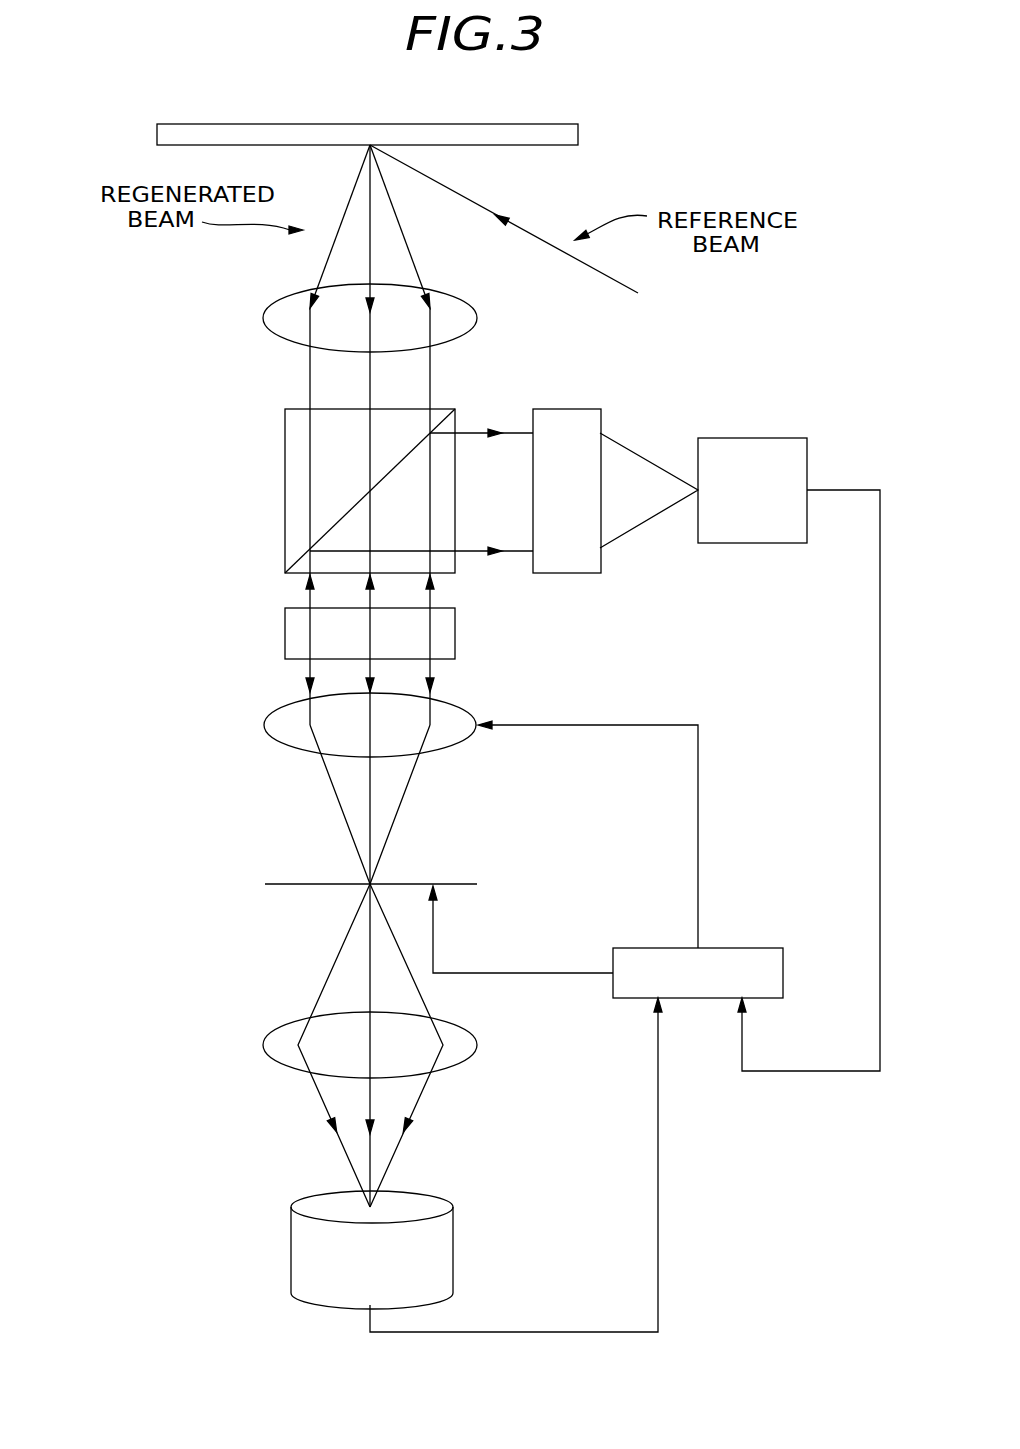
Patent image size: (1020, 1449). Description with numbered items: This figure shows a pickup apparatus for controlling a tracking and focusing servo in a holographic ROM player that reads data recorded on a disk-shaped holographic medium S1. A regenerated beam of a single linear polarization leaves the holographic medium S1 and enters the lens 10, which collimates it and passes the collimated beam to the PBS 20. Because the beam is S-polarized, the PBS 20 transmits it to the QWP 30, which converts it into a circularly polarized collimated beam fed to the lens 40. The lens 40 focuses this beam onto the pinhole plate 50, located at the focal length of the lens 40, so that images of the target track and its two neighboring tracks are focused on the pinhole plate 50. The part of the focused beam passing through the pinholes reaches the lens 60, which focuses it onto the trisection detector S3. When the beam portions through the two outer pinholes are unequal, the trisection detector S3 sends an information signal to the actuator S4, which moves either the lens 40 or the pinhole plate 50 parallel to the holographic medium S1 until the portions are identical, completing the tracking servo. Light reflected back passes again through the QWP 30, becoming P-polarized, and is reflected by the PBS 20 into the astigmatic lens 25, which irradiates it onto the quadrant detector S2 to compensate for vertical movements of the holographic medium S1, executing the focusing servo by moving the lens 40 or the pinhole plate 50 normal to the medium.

The holographic medium S1 is at (578, 133).
The lens 10 is at (477, 318).
The PBS (polarization beam splitter) 20 is at (452, 413).
The astigmatic lens 25 is at (565, 409).
The quadrant detector S2 is at (753, 438).
The QWP (quarter wave plate) 30 is at (455, 633).
The lens 40 is at (453, 707).
The pinhole plate 50 is at (450, 884).
The lens 60 is at (477, 1045).
The trisection detector S3 is at (453, 1248).
The actuator S4 is at (783, 966).